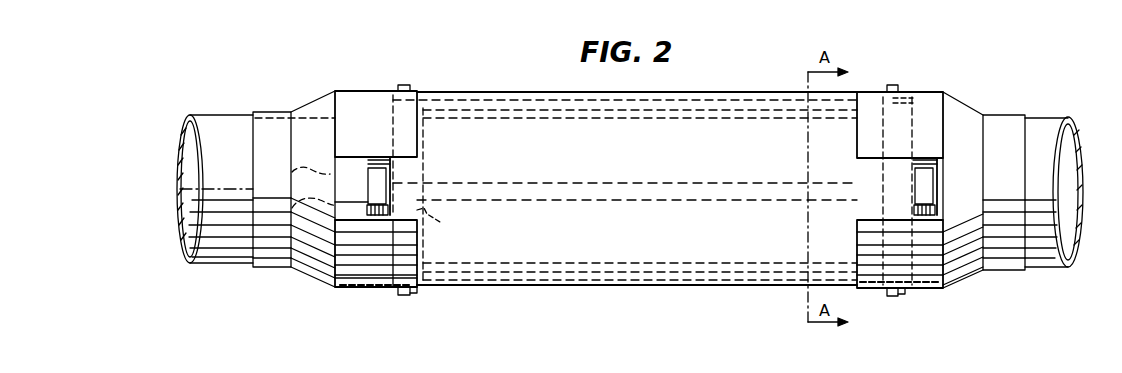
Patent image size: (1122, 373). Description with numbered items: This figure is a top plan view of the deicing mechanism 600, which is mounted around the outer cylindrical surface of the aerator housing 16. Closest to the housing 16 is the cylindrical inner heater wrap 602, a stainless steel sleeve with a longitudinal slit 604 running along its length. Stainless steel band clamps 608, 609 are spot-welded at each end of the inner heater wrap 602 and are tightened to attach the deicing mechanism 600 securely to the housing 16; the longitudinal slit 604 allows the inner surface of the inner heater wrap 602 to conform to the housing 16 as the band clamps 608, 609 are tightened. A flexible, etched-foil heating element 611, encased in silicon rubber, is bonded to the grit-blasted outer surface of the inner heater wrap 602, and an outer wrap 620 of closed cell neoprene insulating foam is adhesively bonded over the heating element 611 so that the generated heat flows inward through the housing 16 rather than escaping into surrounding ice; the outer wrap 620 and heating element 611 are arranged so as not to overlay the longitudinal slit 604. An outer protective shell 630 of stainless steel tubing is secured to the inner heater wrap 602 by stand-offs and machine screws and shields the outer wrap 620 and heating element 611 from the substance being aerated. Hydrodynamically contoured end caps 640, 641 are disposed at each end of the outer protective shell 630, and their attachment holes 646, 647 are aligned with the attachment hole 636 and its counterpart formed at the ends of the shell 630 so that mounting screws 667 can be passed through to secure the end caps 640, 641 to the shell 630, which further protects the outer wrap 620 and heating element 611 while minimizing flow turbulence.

The housing 16 is at (187, 263).
The deicing mechanism 600 is at (972, 72).
The inner heater wrap 602 is at (333, 141).
The longitudinal slit 604 is at (535, 160).
The band clamp 608 is at (397, 177).
The band clamp 609 is at (946, 172).
The heating element 611 is at (440, 219).
The outer wrap 620 is at (389, 130).
The outer protective shell 630 is at (668, 287).
The attachment hole 636 is at (903, 106).
The end cap 640 is at (313, 101).
The end cap 641 is at (975, 110).
The attachment hole 646 is at (417, 92).
The attachment hole 647 is at (412, 292).
The mounting screw 667 is at (404, 85).